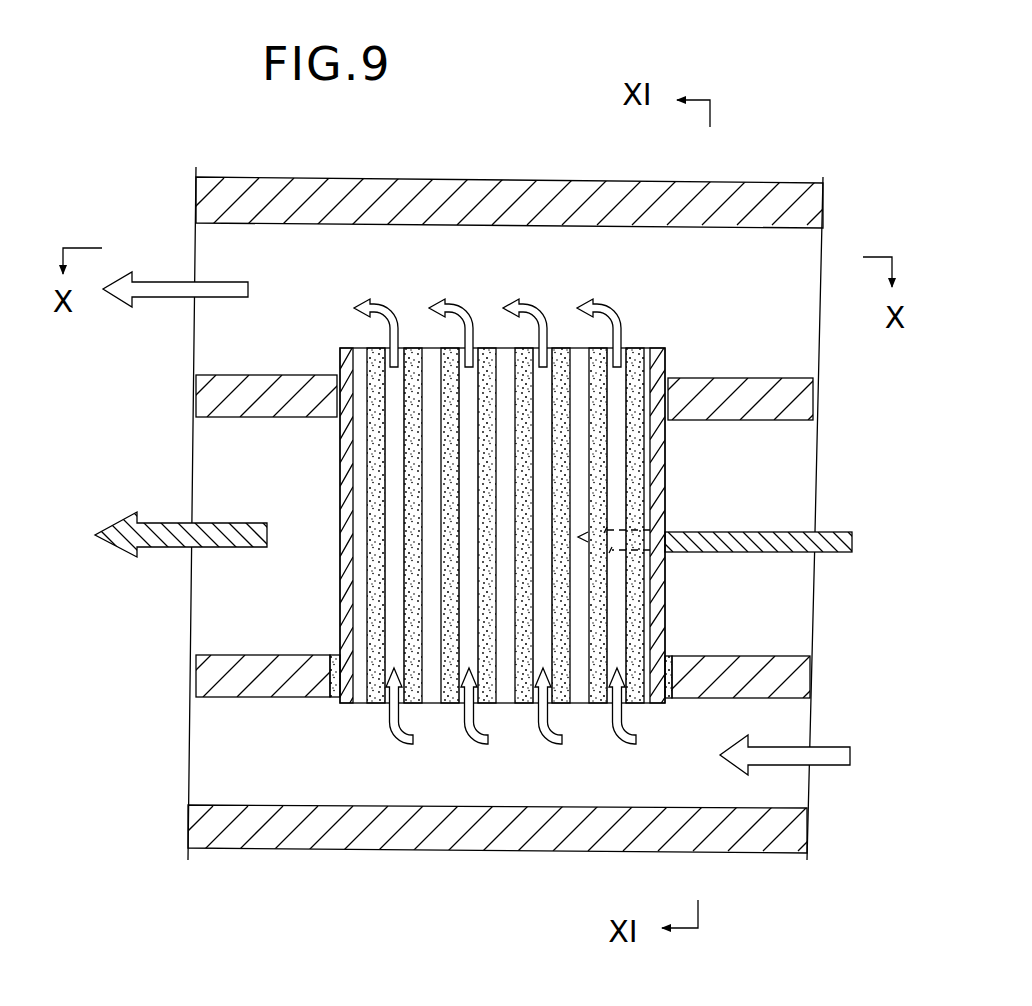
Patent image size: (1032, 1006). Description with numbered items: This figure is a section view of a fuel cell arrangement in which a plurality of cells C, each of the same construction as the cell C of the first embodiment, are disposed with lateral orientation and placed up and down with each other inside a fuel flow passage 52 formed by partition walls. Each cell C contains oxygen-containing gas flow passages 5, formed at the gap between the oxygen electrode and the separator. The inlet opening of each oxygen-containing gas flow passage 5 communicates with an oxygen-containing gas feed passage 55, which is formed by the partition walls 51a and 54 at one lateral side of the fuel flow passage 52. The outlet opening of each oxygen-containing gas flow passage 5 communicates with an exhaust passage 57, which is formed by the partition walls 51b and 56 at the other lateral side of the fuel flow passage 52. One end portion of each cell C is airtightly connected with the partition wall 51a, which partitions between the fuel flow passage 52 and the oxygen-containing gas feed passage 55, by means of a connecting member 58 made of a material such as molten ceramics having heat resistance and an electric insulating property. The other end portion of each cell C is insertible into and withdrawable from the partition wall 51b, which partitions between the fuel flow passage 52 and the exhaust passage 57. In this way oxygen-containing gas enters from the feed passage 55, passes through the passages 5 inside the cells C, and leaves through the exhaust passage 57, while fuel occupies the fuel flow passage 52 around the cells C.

The oxygen-containing gas flow passage 5 is at (505, 366).
The partition wall 51a is at (720, 657).
The partition wall 51b is at (716, 378).
The fuel flow passage 52 is at (838, 532).
The partition wall 54 is at (560, 850).
The oxygen-containing gas feed passage 55 is at (511, 732).
The partition wall 56 is at (565, 181).
The exhaust passage 57 is at (491, 304).
The connecting member 58 is at (332, 655).
The cell C is at (670, 472).